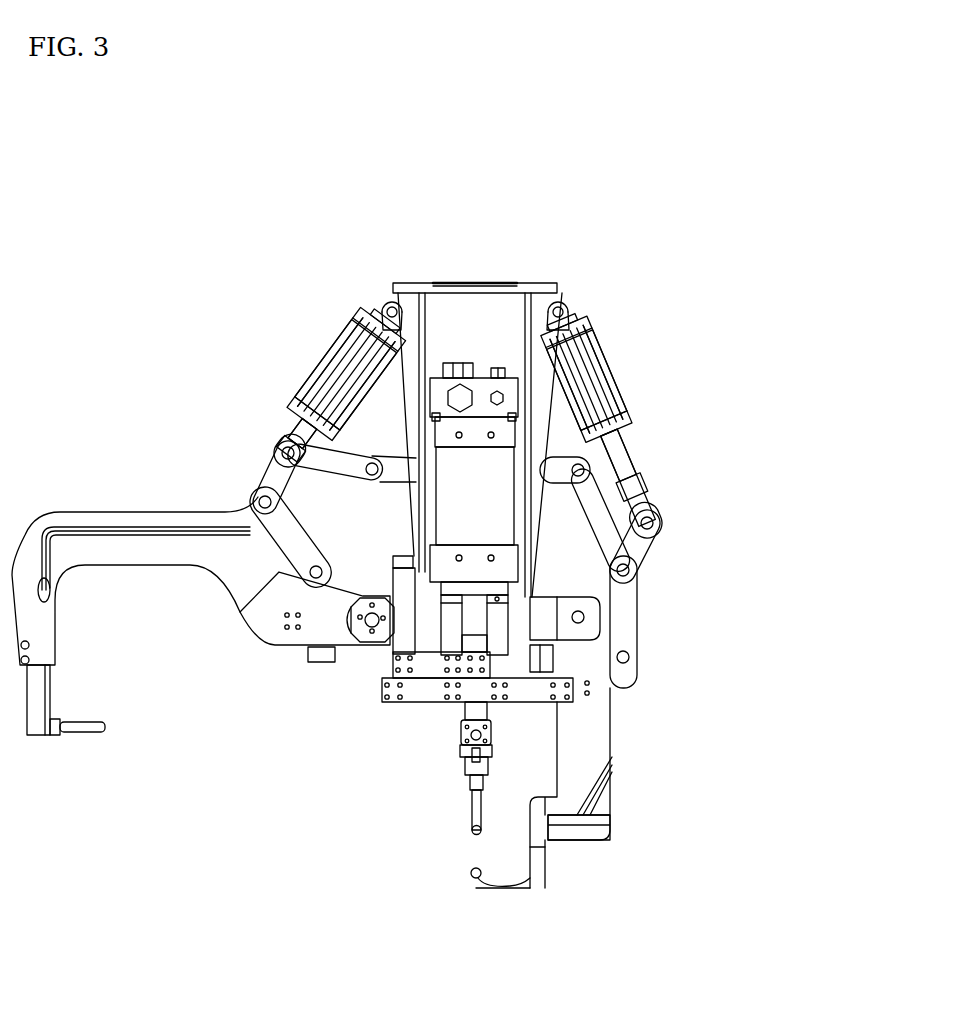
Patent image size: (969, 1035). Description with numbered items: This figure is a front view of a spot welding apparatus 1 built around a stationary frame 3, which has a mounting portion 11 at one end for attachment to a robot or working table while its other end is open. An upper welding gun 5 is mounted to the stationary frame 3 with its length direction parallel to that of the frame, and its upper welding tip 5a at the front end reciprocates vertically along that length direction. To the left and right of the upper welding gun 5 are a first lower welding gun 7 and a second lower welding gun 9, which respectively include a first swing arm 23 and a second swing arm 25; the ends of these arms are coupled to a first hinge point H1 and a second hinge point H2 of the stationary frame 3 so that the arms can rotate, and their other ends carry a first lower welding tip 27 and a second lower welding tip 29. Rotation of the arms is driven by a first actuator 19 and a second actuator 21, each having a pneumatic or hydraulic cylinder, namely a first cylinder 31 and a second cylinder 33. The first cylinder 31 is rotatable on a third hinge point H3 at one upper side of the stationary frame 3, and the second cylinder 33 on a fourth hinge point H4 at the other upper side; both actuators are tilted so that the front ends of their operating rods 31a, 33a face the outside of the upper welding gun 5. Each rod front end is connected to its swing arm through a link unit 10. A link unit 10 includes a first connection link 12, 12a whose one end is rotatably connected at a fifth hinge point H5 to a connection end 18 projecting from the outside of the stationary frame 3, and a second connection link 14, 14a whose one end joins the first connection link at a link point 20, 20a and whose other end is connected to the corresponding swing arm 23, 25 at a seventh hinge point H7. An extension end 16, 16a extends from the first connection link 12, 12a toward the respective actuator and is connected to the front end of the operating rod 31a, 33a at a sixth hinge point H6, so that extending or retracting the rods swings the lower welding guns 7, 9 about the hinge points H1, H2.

The spot welding apparatus 1 is at (190, 303).
The stationary frame 3 is at (470, 305).
The upper welding gun 5 is at (440, 762).
The upper welding tip 5a is at (472, 826).
The first lower welding gun 7 is at (113, 492).
The second lower welding gun 9 is at (640, 740).
The link unit 10 is at (238, 474).
The mounting portion 11 is at (437, 272).
The first connection link 12 is at (340, 472).
The first connection link 12a is at (590, 530).
The second connection link 14 is at (290, 545).
The second connection link 14a is at (635, 605).
The extension end 16 is at (265, 440).
The extension end 16a is at (660, 525).
The connection end 18 is at (330, 382).
The first actuator 19 is at (325, 300).
The link point 20 is at (258, 504).
The link point 20a is at (630, 570).
The second actuator 21 is at (632, 325).
The first swing arm 23 is at (46, 520).
The second swing arm 25 is at (625, 808).
The first lower welding tip 27 is at (80, 735).
The second lower welding tip 29 is at (470, 874).
The first cylinder 31 is at (343, 305).
The operating rod 31a is at (300, 398).
The second cylinder 33 is at (610, 315).
The operating rod 33a is at (622, 432).
The first hinge point H1 is at (372, 628).
The second hinge point H2 is at (586, 617).
The third hinge point H3 is at (382, 305).
The fourth hinge point H4 is at (565, 305).
The fifth hinge point H5 is at (372, 478).
The sixth hinge point H6 is at (275, 452).
The seventh hinge point H7 is at (316, 580).